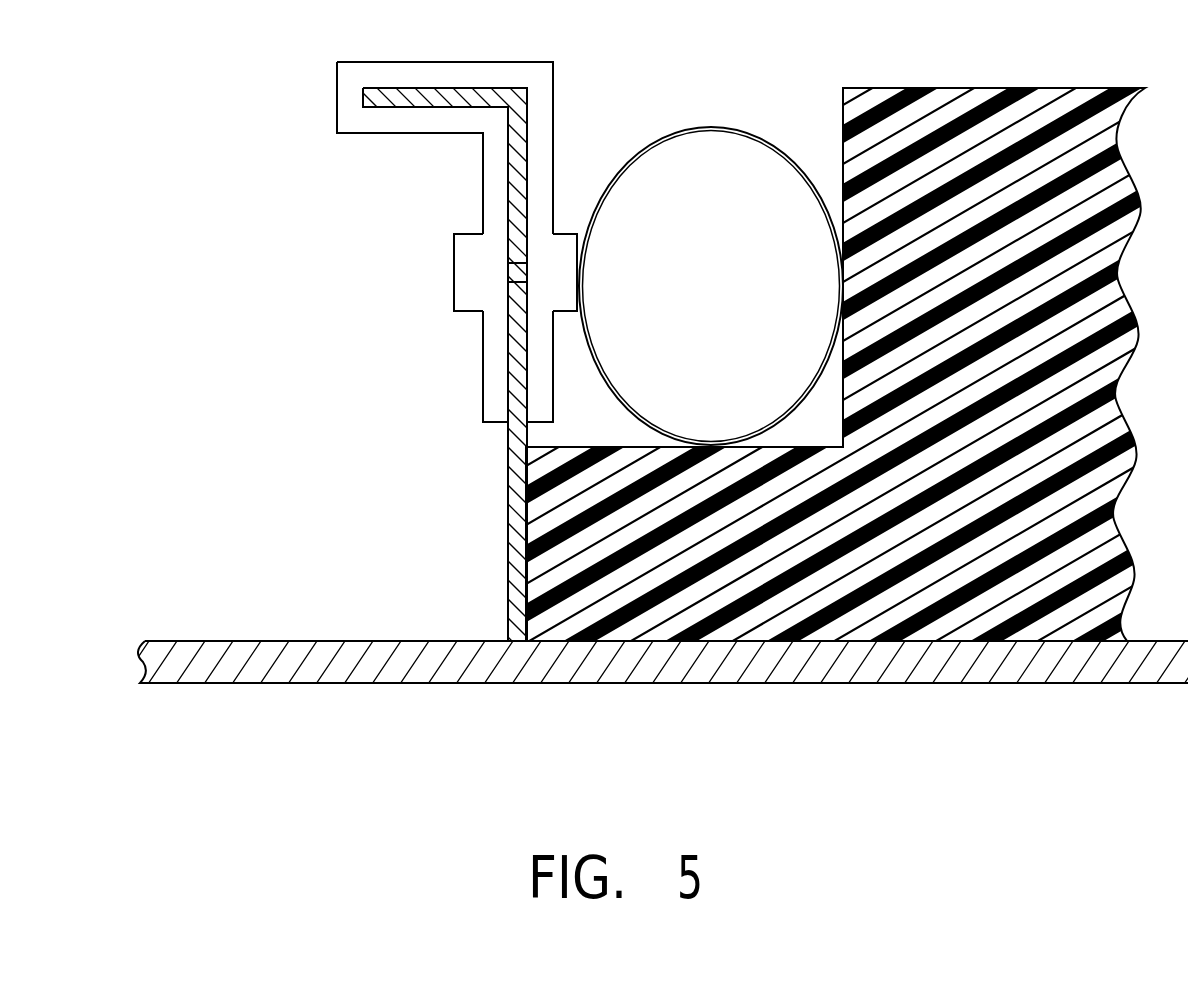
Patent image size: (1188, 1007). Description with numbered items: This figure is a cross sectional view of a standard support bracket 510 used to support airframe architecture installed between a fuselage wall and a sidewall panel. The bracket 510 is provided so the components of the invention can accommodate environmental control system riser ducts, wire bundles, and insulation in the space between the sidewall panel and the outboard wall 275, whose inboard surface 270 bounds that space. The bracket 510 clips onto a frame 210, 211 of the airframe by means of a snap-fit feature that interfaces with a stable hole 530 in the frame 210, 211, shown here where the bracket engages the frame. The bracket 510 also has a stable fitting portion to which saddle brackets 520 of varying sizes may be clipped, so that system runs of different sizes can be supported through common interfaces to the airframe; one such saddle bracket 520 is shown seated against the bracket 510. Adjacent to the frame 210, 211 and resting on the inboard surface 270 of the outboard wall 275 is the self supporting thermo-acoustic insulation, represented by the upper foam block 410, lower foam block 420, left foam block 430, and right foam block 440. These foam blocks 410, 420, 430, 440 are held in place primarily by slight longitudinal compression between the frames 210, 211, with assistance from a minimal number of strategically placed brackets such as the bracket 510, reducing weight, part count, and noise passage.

The bracket 510 is at (457, 214).
The saddle bracket 520 is at (708, 127).
The stable hole 530 is at (510, 272).
The frame 210 is at (431, 413).
The frame 211 is at (508, 513).
The inboard surface 270 is at (652, 660).
The outboard wall 275 is at (423, 668).
The upper foam block 410 is at (844, 503).
The lower foam block 420 is at (844, 503).
The left foam block 430 is at (844, 503).
The right foam block 440 is at (810, 607).